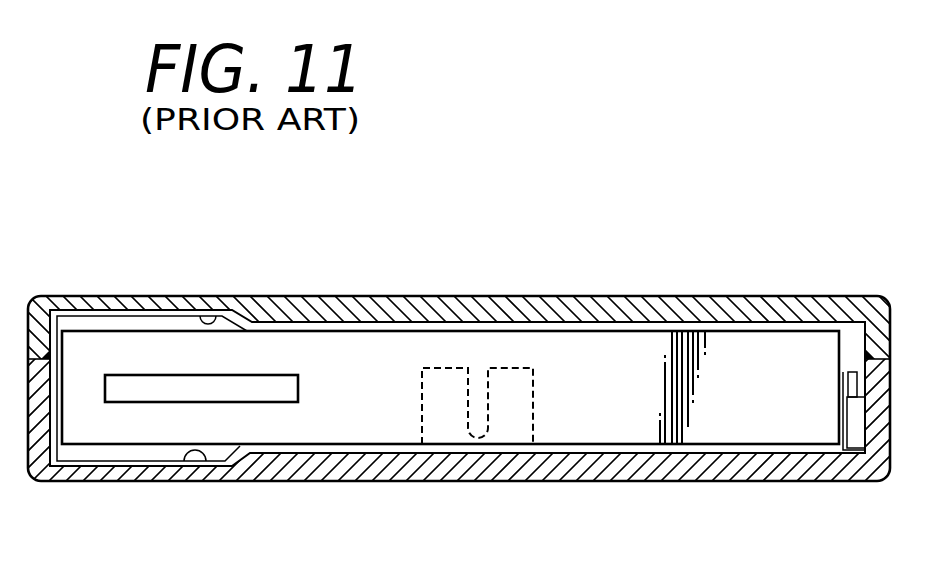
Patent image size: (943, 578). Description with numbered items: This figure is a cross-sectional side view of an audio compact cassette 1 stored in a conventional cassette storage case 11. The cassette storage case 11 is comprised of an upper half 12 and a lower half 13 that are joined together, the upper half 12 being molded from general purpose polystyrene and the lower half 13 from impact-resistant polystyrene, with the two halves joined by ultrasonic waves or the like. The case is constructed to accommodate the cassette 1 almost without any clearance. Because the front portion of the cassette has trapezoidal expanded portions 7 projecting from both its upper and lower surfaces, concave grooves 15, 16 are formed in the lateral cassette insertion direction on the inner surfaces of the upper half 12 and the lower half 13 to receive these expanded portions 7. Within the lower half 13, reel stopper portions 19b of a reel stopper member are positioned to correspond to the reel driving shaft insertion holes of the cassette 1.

The audio compact cassette 1 is at (632, 348).
The trapezoidal expanded portions 7 is at (158, 322).
The cassette storage case 11 is at (471, 365).
The upper half 12 is at (425, 297).
The lower half 13 is at (362, 483).
The concave groove 15 is at (222, 310).
The concave groove 16 is at (205, 460).
The reel stopper portions 19b is at (518, 367).